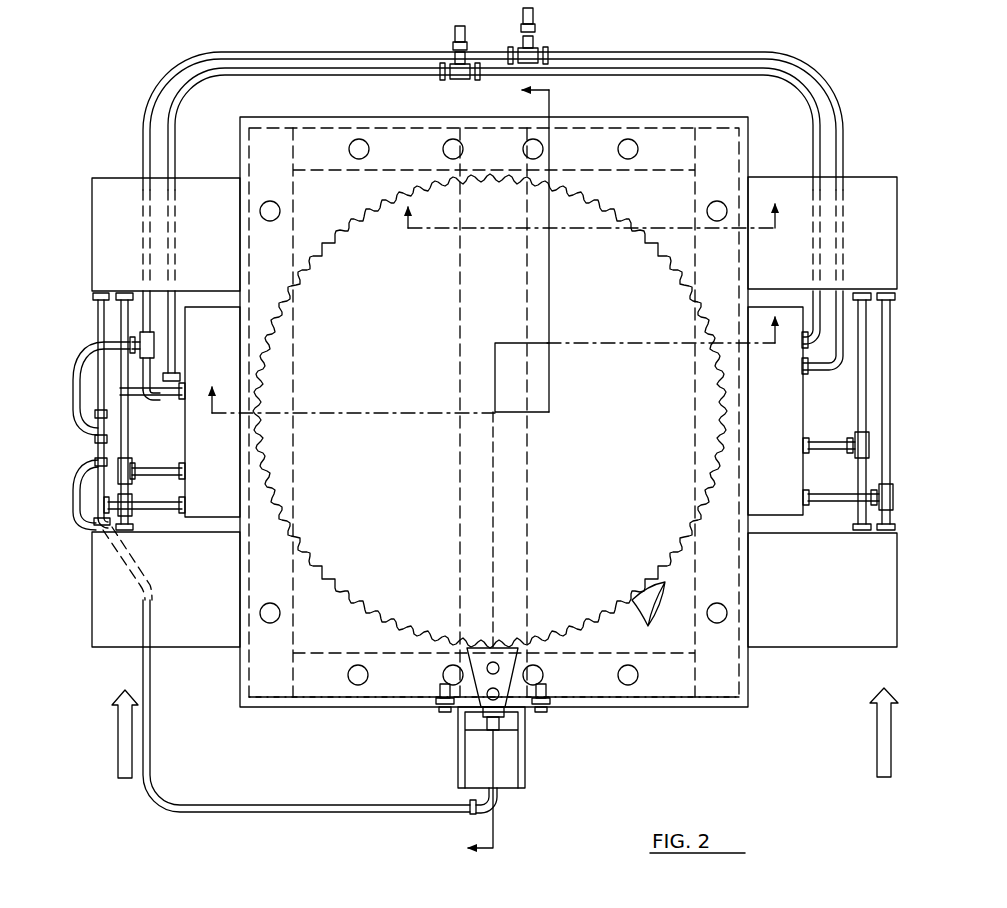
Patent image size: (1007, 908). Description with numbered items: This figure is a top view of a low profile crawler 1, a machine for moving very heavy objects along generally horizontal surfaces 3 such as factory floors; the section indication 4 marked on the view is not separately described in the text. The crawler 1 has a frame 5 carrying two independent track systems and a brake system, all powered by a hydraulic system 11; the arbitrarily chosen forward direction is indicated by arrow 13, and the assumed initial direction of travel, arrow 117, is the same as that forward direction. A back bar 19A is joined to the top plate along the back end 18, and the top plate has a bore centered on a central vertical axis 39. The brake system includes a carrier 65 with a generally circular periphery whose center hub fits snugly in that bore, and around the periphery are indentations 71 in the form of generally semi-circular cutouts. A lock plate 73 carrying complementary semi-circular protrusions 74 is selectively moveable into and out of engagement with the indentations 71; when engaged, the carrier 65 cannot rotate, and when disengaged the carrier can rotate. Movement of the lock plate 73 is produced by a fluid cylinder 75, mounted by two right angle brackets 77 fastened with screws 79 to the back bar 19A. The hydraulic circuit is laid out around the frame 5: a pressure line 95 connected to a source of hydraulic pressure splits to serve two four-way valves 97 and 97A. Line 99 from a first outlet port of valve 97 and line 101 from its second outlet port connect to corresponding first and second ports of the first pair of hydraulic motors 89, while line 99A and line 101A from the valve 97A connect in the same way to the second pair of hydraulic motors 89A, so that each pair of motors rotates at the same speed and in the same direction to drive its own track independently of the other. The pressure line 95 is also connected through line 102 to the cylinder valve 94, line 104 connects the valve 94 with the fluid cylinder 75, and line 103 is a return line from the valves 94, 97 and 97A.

The low profile crawler 1 is at (648, 117).
The horizontal surface 3 is at (518, 476).
The section line 4- 4 is at (491, 382).
The frame 5 is at (591, 235).
The hydraulic system 11 is at (118, 175).
The forward direction arrow 13 is at (118, 750).
The back end 18 is at (645, 707).
The back bar 19A is at (608, 700).
The central vertical axis 39 is at (493, 412).
The carrier 65 is at (330, 240).
The indentations 71 is at (659, 616).
The lock plate 73 is at (520, 660).
The semi-circular protrusions 74 is at (497, 640).
The fluid cylinder 75 is at (478, 773).
The right angle brackets 77 is at (525, 770).
The screws 79 is at (440, 715).
The first pair of hydraulic motors 89 is at (885, 233).
The second pair of hydraulic motors 89A is at (228, 229).
The valve 94 is at (112, 455).
The pressure line 95 is at (538, 20).
The four-way valve 97 is at (783, 483).
The four-way valve 97A is at (232, 355).
The line 99 is at (826, 440).
The line 99A is at (156, 468).
The line 101 is at (832, 495).
The line 101A is at (152, 500).
The line 102 is at (78, 385).
The return line 103 is at (456, 36).
The line 104 is at (195, 800).
The direction of travel arrow 117 is at (877, 757).